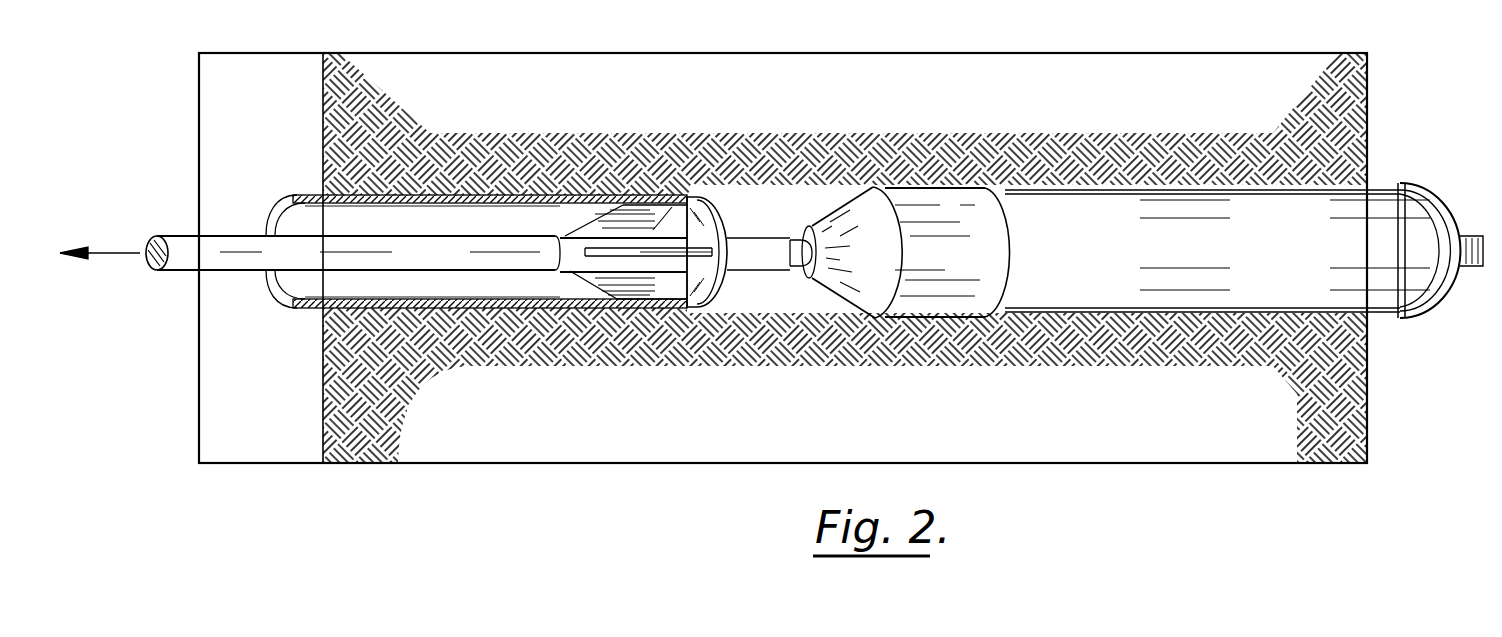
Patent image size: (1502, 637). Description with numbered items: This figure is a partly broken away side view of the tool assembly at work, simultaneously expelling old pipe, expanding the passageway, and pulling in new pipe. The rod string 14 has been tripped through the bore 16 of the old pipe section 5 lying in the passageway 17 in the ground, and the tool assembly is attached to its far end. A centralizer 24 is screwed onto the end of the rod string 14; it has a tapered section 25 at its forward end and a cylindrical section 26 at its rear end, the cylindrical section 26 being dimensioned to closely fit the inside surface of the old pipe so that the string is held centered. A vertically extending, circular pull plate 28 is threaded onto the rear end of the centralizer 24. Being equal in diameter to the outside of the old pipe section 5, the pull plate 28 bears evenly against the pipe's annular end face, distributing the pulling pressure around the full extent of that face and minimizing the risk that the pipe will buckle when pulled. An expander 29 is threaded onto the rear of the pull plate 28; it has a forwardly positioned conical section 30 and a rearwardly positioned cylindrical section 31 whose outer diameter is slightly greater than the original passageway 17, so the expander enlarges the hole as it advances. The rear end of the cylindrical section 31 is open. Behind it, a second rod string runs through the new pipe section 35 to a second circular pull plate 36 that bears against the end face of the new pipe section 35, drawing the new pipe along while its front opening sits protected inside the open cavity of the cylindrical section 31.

The old pipe section 5 is at (302, 195).
The rod string 14 is at (191, 234).
The bore 16 is at (306, 288).
The passageway 17 is at (792, 298).
The centralizer 24 is at (567, 243).
The tapered section 25 is at (584, 283).
The cylindrical section 26 is at (642, 238).
The pull plate 28 is at (727, 282).
The expander 29 is at (1015, 252).
The conical section 30 is at (812, 224).
The cylindrical section 31 is at (963, 252).
The new pipe section 35 is at (1378, 306).
The second pull plate 36 is at (1426, 184).